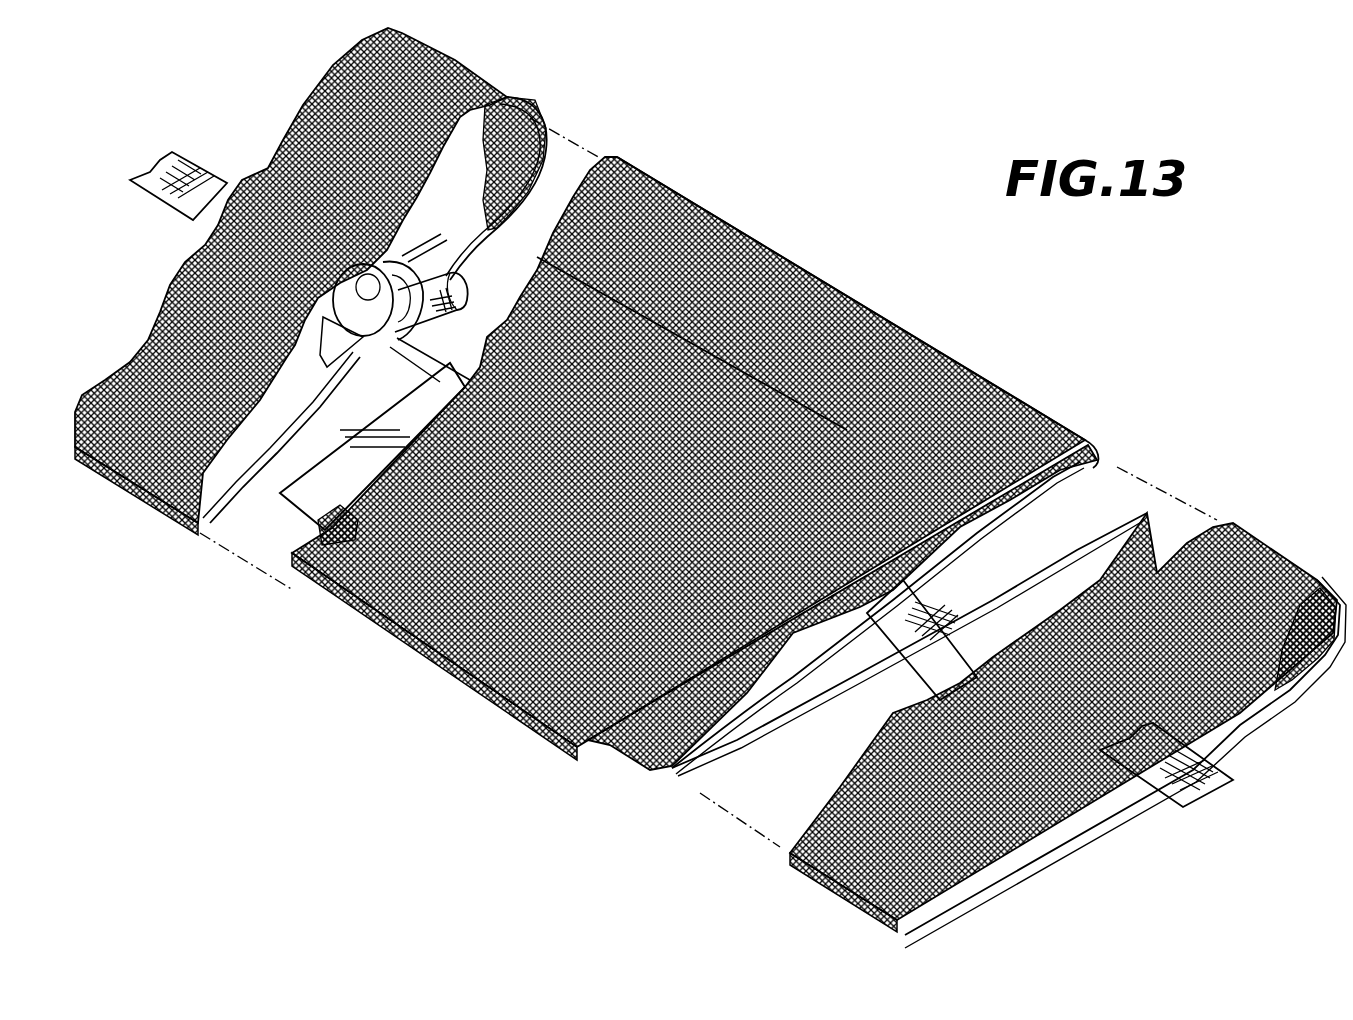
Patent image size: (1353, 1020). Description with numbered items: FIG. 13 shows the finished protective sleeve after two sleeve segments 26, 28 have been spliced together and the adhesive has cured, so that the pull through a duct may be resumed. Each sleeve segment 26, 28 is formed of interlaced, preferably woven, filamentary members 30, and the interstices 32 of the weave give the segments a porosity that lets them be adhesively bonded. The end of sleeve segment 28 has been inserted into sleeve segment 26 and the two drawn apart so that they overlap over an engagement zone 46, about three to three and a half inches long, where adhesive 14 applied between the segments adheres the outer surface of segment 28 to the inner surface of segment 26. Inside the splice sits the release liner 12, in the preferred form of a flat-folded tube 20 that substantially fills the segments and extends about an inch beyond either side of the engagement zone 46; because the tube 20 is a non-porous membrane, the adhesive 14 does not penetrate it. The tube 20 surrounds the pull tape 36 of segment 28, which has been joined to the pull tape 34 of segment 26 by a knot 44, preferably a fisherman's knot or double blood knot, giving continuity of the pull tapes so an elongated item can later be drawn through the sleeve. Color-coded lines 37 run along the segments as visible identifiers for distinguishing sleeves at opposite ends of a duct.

The release liner 12 is at (333, 493).
The adhesive 14 is at (300, 537).
The tube 20 is at (1113, 507).
The sleeve segment 26 is at (622, 180).
The sleeve segment 28 is at (1090, 458).
The filamentary members 30 is at (470, 80).
The interstices 32 is at (727, 222).
The pull tape 34 is at (172, 153).
The pull tape 36 is at (1170, 752).
The color-coded lines 37 is at (977, 513).
The knot 44 is at (400, 273).
The engagement zone 46 is at (890, 340).